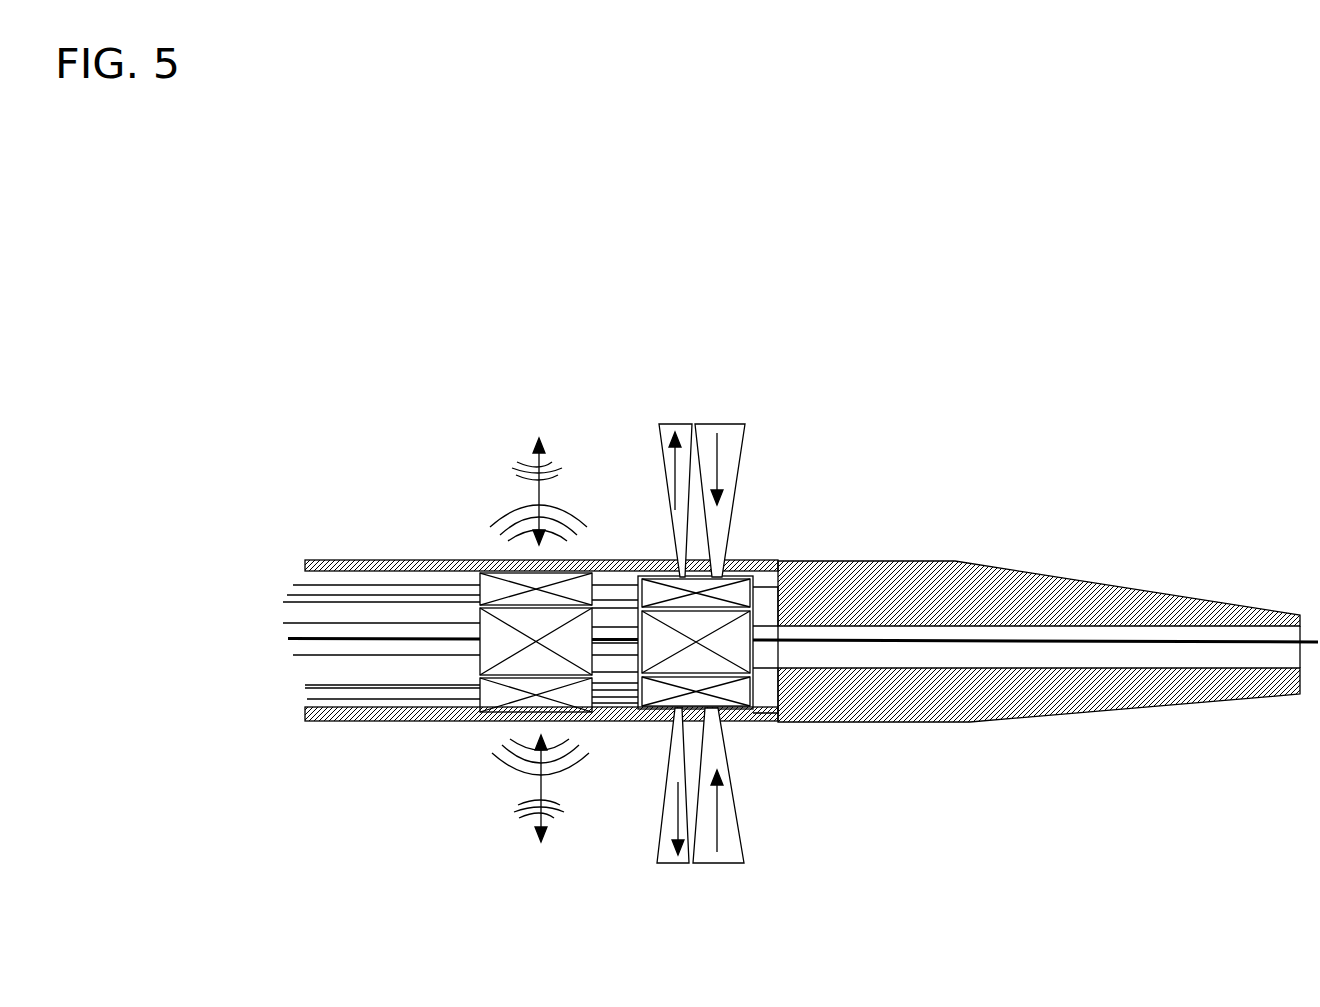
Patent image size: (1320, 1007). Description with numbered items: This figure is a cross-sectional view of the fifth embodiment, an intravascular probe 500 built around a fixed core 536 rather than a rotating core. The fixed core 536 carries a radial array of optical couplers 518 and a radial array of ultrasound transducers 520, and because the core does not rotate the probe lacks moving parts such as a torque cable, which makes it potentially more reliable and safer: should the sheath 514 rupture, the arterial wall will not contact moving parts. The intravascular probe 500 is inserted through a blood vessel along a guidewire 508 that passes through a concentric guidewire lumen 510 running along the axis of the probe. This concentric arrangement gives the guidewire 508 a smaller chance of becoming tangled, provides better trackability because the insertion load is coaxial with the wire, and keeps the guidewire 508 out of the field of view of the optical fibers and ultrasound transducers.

The intravascular probe 500 is at (800, 643).
The guidewire 508 is at (1162, 638).
The concentric guidewire lumen 510 is at (1100, 690).
The sheath 514 is at (393, 560).
The radial array of optical couplers 518 is at (762, 590).
The radial array of ultrasound transducers 520 is at (481, 615).
The fixed core 536 is at (448, 702).